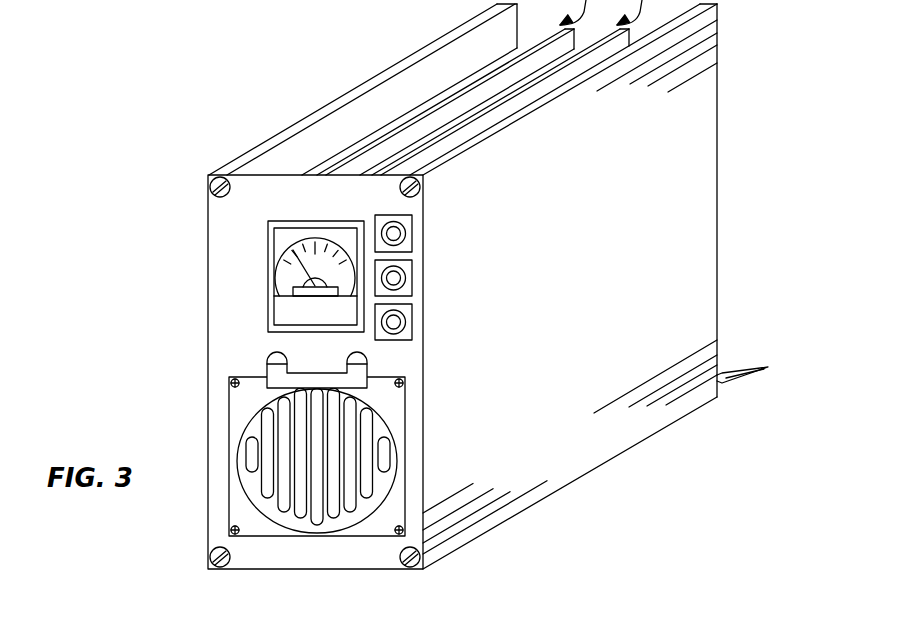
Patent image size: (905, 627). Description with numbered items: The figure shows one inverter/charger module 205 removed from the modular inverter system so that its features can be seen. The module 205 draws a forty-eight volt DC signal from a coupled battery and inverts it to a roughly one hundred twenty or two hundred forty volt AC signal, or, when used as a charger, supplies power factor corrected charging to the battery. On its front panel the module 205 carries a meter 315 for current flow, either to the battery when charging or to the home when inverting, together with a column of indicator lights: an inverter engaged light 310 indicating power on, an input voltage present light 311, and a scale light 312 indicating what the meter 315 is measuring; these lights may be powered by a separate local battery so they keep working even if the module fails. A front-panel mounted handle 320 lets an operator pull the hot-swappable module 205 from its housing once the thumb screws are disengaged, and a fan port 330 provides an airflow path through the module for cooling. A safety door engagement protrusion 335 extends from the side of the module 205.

The inverter/charger module 205 is at (172, 337).
The meter 315 is at (268, 272).
The scale light 312 is at (413, 233).
The input voltage present indicator light 311 is at (413, 278).
The inverter engaged indicator light 310 is at (413, 322).
The handle 320 is at (372, 366).
The fan port 330 is at (402, 446).
The safety door engagement protrusion 335 is at (750, 388).